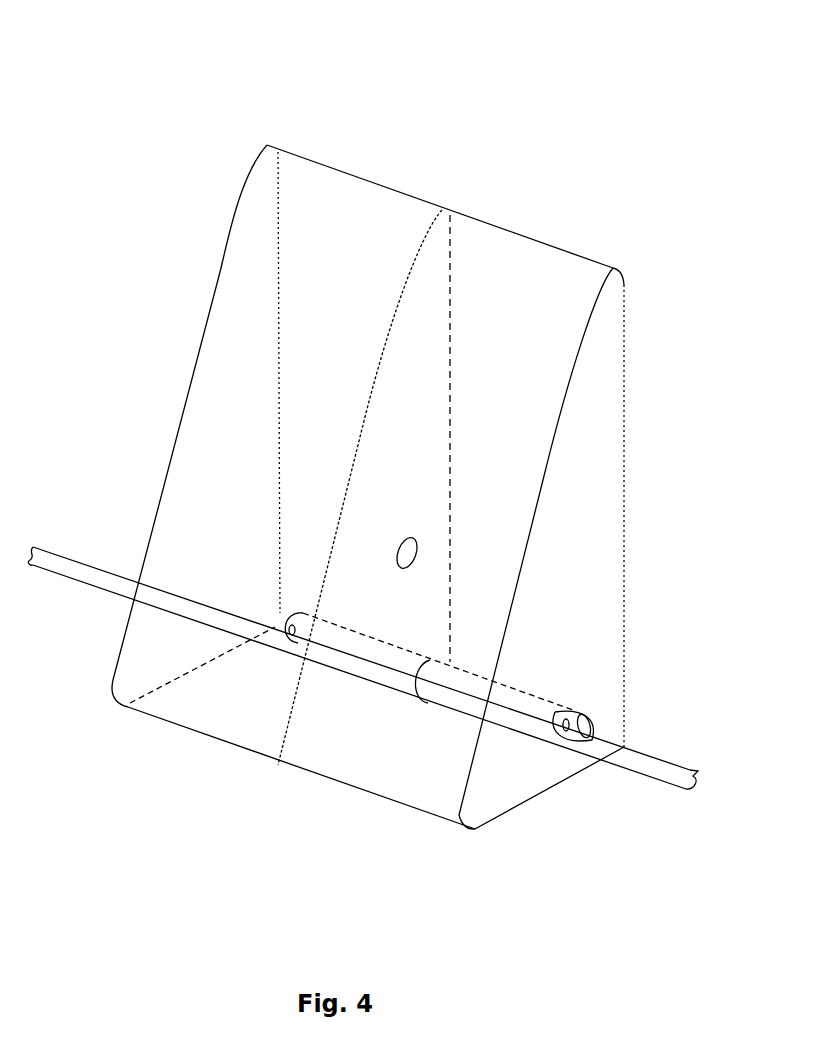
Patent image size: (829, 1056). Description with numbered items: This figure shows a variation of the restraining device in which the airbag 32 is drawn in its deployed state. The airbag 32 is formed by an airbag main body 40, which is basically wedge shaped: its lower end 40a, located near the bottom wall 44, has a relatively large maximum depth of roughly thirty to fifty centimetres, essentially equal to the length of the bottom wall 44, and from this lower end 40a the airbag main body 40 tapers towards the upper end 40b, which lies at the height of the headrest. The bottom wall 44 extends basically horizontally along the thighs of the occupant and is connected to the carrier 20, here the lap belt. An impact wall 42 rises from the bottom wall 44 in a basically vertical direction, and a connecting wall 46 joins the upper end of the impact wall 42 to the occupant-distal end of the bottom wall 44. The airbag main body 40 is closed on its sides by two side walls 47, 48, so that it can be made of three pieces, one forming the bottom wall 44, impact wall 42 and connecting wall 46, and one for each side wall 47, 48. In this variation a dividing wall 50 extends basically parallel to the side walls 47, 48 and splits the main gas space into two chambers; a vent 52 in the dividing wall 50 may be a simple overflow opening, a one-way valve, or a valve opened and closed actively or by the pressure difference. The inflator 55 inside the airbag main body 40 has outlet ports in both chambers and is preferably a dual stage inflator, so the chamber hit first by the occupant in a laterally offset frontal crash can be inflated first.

The carrier 20 is at (75, 567).
The airbag 32 is at (177, 153).
The airbag main body 40 is at (310, 305).
The lower end 40a is at (413, 768).
The upper end 40b is at (543, 298).
The impact wall 42 is at (638, 455).
The bottom wall 44 is at (258, 765).
The connecting wall 46 is at (228, 335).
The side wall 47 is at (175, 405).
The side wall 48 is at (580, 571).
The dividing wall 50 is at (413, 383).
The vent 52 is at (417, 551).
The inflator 55 is at (525, 715).